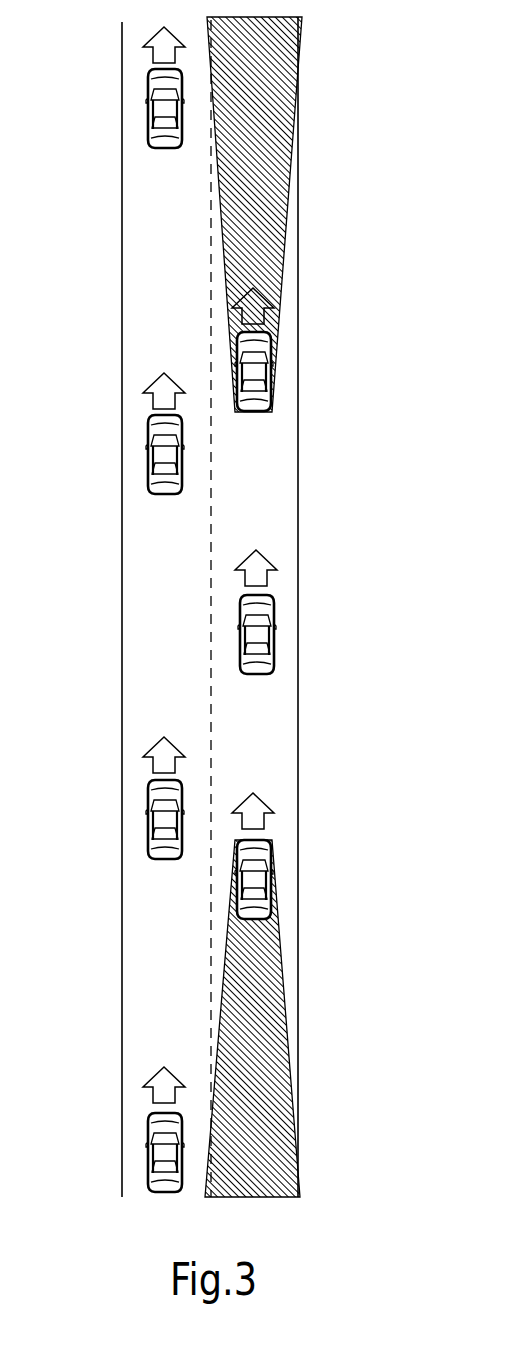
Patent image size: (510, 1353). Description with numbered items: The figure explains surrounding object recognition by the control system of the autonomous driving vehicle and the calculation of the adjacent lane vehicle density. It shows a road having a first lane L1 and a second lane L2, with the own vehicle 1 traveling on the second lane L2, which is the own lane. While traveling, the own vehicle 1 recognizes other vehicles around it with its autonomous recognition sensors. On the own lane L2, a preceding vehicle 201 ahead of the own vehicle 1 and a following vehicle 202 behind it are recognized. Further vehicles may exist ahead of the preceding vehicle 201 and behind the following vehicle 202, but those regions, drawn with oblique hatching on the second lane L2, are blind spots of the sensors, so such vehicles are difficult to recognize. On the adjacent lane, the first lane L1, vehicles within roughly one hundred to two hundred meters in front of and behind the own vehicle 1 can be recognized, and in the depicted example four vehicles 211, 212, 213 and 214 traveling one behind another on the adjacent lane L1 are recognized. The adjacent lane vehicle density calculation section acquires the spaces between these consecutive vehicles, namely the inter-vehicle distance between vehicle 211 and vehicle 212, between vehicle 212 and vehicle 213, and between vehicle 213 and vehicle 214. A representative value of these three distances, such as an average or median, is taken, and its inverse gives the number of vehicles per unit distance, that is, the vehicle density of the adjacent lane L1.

The own vehicle 1 is at (275, 630).
The preceding vehicle 201 is at (272, 371).
The following vehicle 202 is at (272, 872).
The vehicle 211 is at (149, 108).
The vehicle 212 is at (149, 452).
The vehicle 213 is at (149, 813).
The vehicle 214 is at (149, 1139).
The first lane L1 is at (146, 566).
The second lane L2 is at (278, 490).